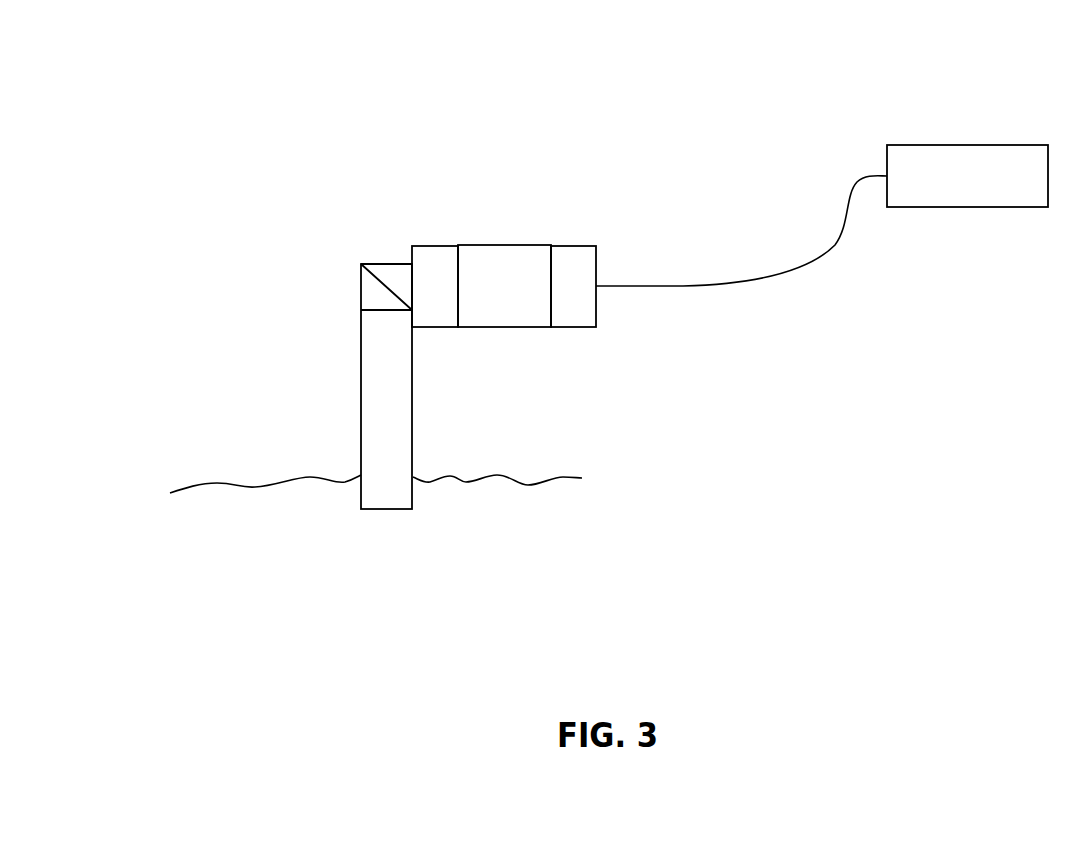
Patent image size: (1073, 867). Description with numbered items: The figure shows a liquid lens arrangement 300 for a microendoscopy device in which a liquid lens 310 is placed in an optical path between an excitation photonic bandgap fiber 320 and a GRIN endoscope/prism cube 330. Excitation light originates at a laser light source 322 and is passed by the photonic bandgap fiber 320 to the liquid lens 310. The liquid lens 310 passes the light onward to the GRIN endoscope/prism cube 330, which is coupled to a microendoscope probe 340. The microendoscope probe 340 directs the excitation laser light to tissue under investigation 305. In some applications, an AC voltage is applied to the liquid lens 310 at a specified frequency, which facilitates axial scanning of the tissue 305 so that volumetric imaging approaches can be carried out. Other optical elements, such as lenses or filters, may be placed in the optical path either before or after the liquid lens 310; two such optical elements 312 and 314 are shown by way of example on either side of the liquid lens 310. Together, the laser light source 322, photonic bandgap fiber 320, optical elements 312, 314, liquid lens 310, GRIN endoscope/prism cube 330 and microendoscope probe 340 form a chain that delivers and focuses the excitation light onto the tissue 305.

The liquid lens arrangement 300 is at (800, 29).
The tissue under investigation 305 is at (483, 534).
The liquid lens 310 is at (496, 244).
The optical element 312 is at (432, 247).
The optical element 314 is at (578, 245).
The excitation photonic bandgap fiber 320 is at (684, 282).
The laser light source 322 is at (997, 144).
The GRIN endoscope/prism cube 330 is at (385, 262).
The microendoscope probe 340 is at (413, 390).